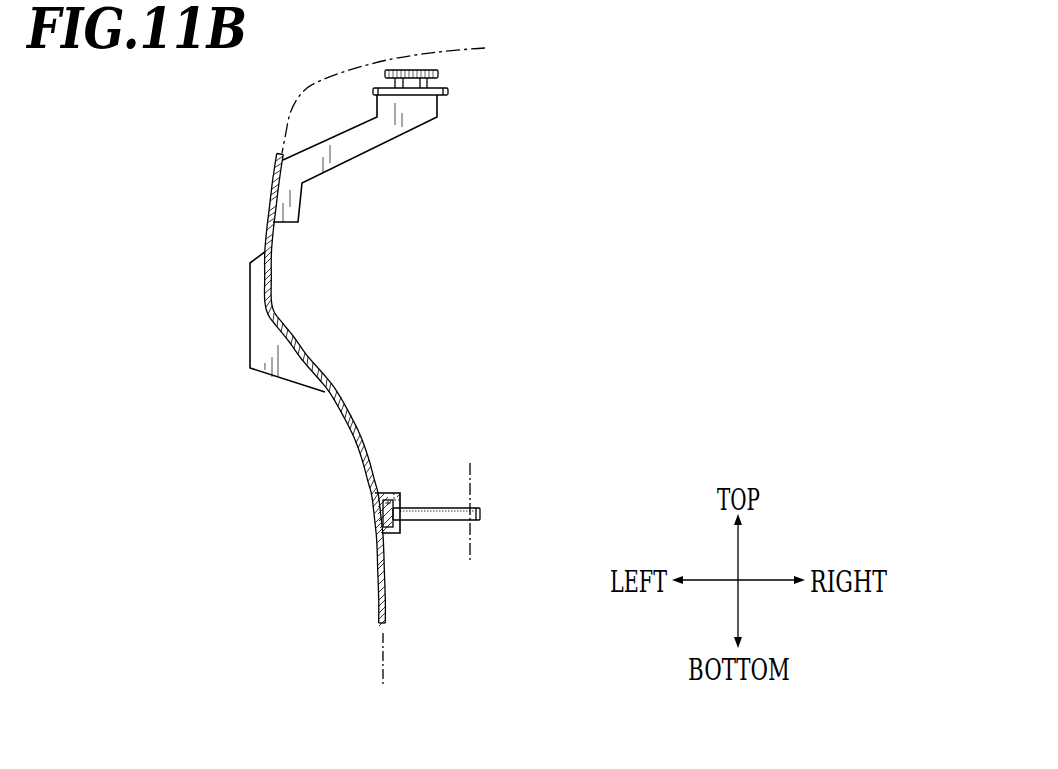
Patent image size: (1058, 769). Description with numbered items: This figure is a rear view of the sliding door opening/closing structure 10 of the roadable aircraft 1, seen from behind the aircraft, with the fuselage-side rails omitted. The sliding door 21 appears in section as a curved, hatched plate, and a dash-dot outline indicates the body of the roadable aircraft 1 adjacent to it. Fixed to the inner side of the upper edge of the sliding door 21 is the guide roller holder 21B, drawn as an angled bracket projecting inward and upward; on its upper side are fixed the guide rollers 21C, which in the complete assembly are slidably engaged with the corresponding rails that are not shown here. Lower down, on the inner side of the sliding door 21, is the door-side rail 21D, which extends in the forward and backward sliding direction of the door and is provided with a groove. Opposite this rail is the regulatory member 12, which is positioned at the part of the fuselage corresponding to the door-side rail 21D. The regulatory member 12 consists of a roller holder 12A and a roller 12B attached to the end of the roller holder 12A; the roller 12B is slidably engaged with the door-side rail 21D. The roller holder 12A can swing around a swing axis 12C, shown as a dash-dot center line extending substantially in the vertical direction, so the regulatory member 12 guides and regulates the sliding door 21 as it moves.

The roadable aircraft 1 is at (337, 70).
The sliding door opening/closing structure 10 is at (373, 320).
The regulatory member 12 is at (472, 493).
The roller holder 12A is at (420, 508).
The roller 12B is at (388, 498).
The swing axis 12C is at (477, 493).
The sliding door 21 is at (345, 423).
The guide roller holder 21B is at (360, 143).
The guide rollers 21C is at (440, 73).
The door-side rail 21D is at (397, 535).